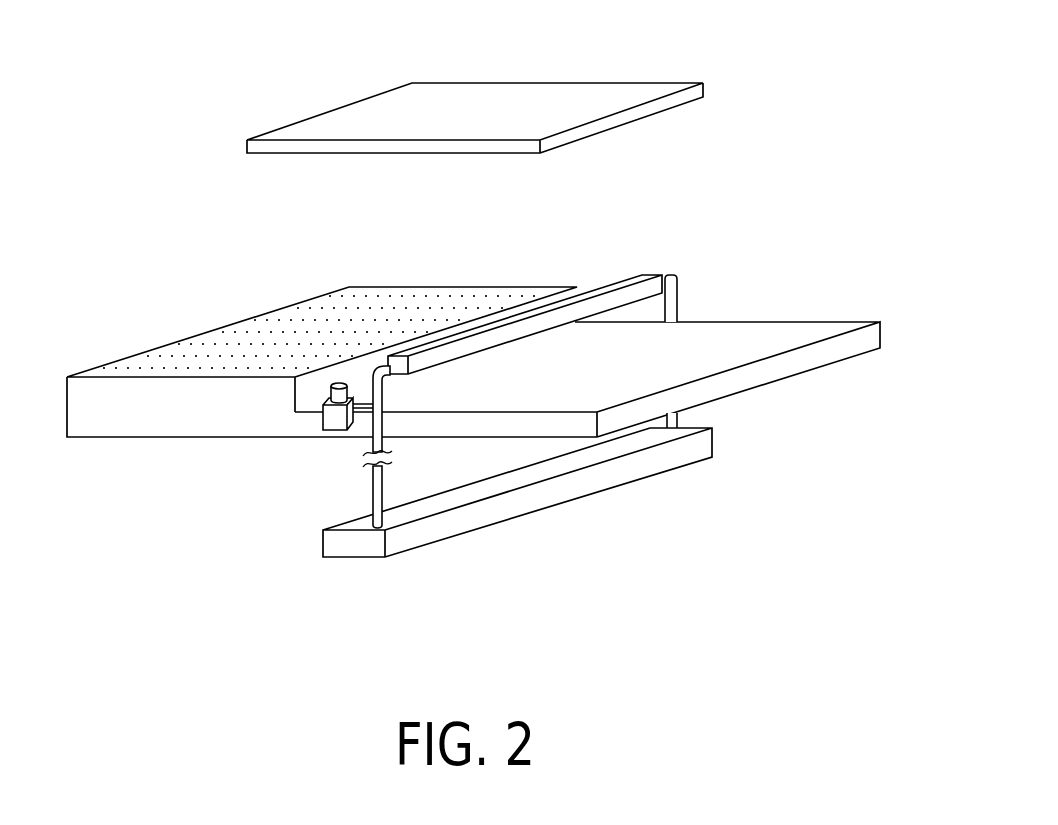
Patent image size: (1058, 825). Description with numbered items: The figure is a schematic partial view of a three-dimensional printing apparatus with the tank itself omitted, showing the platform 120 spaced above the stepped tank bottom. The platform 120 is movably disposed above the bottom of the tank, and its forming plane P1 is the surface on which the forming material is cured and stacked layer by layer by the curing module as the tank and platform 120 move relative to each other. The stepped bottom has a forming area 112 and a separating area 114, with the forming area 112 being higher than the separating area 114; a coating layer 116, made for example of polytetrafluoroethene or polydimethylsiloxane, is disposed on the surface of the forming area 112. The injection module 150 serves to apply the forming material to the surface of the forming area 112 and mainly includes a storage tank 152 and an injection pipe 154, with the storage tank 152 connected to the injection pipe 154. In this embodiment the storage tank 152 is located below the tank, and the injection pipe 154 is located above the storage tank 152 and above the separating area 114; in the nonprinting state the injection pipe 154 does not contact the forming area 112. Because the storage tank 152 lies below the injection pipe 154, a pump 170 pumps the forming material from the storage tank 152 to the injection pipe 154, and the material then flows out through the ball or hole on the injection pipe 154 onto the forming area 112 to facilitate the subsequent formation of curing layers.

The platform 120 is at (597, 95).
The forming plane P1 is at (618, 142).
The forming area 112 is at (138, 418).
The coating layer 116 is at (294, 324).
The separating area 114 is at (528, 430).
The injection module 150 is at (517, 469).
The storage tank 152 is at (468, 617).
The injection pipe 154 is at (450, 353).
The pump 170 is at (323, 418).